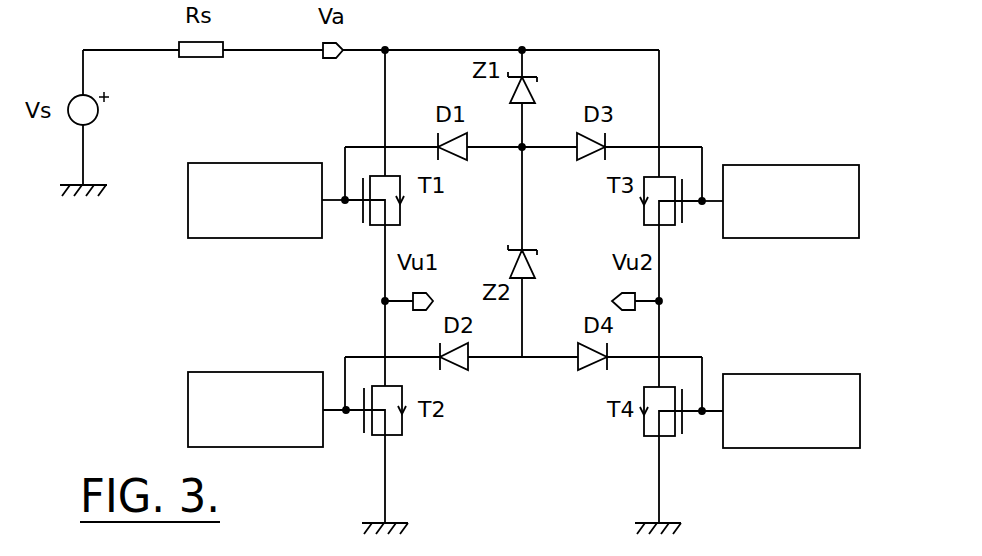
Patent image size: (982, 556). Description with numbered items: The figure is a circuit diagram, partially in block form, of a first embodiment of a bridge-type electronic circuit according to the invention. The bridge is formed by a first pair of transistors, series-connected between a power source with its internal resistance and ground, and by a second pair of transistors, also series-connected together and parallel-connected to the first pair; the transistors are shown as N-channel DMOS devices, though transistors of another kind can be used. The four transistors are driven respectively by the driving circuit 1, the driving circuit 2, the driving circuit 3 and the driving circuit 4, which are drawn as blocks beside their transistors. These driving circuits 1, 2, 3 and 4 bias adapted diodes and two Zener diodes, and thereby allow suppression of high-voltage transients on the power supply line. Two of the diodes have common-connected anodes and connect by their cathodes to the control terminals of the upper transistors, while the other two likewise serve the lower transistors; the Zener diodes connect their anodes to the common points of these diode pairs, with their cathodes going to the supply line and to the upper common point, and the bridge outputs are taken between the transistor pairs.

The driving circuit 1 is at (187, 197).
The driving circuit 2 is at (188, 403).
The driving circuit 3 is at (777, 238).
The driving circuit 4 is at (777, 448).